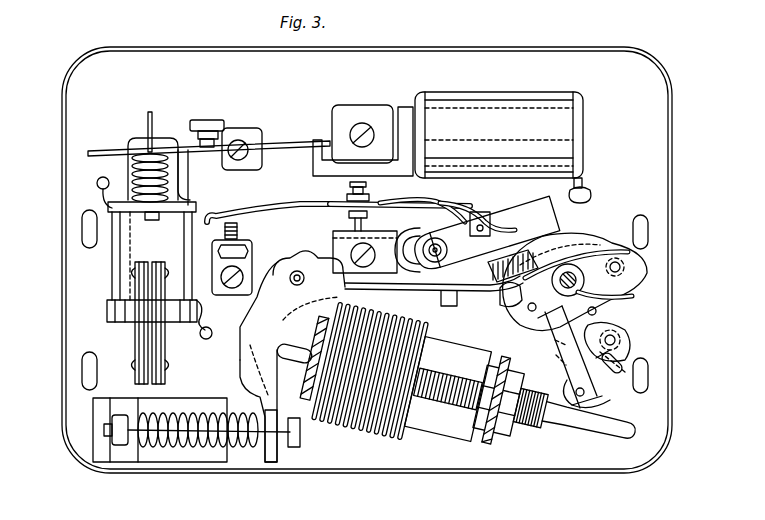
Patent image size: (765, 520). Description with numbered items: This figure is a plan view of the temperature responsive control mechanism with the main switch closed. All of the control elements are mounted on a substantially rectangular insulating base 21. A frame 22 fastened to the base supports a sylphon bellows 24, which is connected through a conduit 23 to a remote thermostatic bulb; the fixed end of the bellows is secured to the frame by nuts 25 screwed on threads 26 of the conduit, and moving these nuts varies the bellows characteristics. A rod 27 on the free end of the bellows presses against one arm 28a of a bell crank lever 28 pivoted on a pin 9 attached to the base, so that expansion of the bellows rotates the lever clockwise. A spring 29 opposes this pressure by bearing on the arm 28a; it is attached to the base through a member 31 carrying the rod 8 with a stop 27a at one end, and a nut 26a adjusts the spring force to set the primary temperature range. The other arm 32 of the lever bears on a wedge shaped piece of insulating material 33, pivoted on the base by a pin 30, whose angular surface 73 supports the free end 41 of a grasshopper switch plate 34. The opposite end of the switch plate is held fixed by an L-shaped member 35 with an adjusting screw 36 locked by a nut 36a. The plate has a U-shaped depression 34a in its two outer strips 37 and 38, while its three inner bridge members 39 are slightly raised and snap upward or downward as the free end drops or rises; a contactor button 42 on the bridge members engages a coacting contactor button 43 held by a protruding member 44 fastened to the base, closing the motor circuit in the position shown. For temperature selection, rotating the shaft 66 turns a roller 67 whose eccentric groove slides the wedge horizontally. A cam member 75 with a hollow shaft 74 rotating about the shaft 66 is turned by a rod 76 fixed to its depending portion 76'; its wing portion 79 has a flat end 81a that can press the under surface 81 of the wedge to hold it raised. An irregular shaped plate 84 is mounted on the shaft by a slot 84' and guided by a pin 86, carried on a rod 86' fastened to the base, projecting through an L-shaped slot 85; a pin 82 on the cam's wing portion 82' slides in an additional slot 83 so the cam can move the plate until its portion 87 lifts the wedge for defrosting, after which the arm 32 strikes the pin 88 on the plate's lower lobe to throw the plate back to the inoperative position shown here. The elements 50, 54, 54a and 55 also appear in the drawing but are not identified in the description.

The rod 8 is at (276, 440).
The pin 9 is at (298, 270).
The base 21 is at (668, 160).
The frame 22 is at (433, 428).
The conduit 23 is at (620, 442).
The sylphon bellows 24 is at (350, 435).
The nuts 25 is at (488, 437).
The threads 26 is at (533, 420).
The nut 26a is at (122, 445).
The rod 27 is at (292, 358).
The stop 27a is at (296, 448).
The bell crank lever 28 is at (247, 380).
The arm 28a is at (256, 346).
The spring 29 is at (200, 443).
The pin 30 is at (434, 289).
The member 31 is at (137, 456).
The arm 32 is at (448, 305).
The wedge shaped piece of insulating material 33 is at (548, 212).
The switch plate 34 is at (455, 210).
The U-shaped depression 34a is at (388, 207).
The L-shaped member 35 is at (236, 292).
The adjusting screw 36 is at (240, 234).
The nut 36a is at (249, 253).
The outer strip 37 is at (440, 202).
The outer strip 38 is at (598, 396).
The bridge members 39 is at (298, 207).
The free end 41 is at (488, 222).
The contactor button 42 is at (348, 199).
The contactor button 43 is at (352, 190).
The protruding member 44 is at (318, 166).
The lever bar 50 is at (270, 145).
The plunger 54 is at (132, 335).
The solenoid 54a is at (125, 255).
The return spring assembly 55 is at (193, 137).
The temperature-selector shaft 66 is at (598, 312).
The roller 67 is at (582, 225).
The angular surface 73 is at (537, 222).
The hollow shaft 74 is at (610, 257).
The cam member 75 is at (605, 298).
The rod 76 is at (553, 349).
The depending portion 76' is at (552, 364).
The wing portion 79 is at (529, 311).
The under surface 81 is at (515, 232).
The flat end 81a is at (506, 316).
The pin 82 is at (654, 267).
The wing portion 82' is at (654, 278).
The slot 83 is at (622, 333).
The irregular shaped plate 84 is at (602, 360).
The slot 84' is at (537, 323).
The L-shaped slot 85 is at (600, 360).
The pin 86 is at (649, 366).
The rod 86' is at (651, 356).
The portion 87 is at (568, 263).
The pin 88 is at (568, 388).